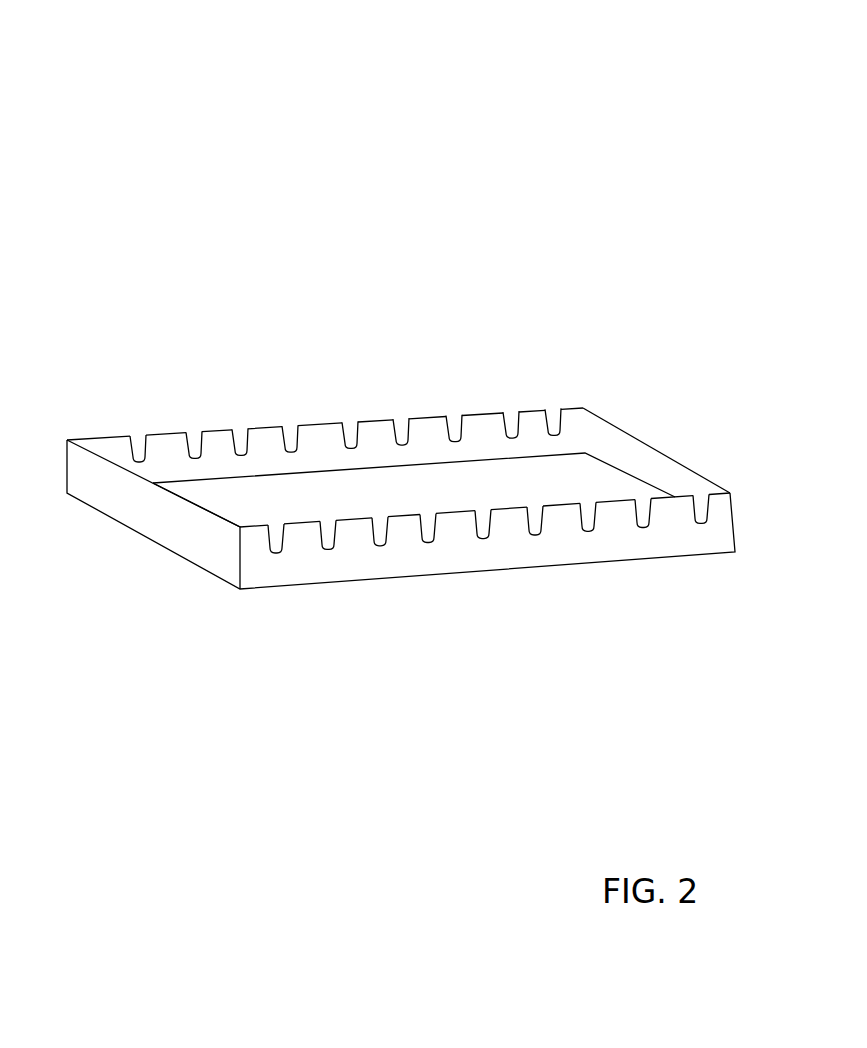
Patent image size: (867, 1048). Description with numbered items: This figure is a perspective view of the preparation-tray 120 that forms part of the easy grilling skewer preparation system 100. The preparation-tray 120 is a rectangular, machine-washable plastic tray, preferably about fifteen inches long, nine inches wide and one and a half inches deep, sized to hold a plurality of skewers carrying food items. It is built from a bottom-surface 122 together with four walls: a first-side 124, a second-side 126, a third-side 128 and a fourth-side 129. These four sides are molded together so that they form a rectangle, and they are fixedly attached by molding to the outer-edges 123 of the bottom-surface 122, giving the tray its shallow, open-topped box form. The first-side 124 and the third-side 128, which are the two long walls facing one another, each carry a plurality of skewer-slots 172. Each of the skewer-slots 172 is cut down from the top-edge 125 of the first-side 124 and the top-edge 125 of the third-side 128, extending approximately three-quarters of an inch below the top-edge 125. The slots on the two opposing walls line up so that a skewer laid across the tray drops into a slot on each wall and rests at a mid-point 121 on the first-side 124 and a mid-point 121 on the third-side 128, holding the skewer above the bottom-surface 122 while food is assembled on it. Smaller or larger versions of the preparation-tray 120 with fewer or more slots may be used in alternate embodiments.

The easy grilling skewer preparation system 100 is at (665, 62).
The preparation-tray 120 is at (678, 88).
The mid-point 121 is at (193, 457).
The bottom-surface 122 is at (418, 487).
The outer-edges 123 is at (272, 473).
The first-side 124 is at (430, 555).
The top-edge 125 is at (530, 407).
The second-side 126 is at (157, 545).
The third-side 128 is at (315, 420).
The fourth-side 129 is at (645, 440).
The skewer-slots 172 is at (397, 420).